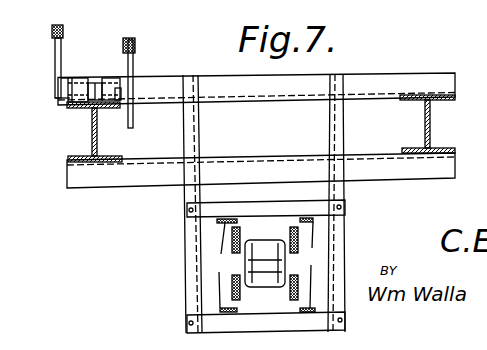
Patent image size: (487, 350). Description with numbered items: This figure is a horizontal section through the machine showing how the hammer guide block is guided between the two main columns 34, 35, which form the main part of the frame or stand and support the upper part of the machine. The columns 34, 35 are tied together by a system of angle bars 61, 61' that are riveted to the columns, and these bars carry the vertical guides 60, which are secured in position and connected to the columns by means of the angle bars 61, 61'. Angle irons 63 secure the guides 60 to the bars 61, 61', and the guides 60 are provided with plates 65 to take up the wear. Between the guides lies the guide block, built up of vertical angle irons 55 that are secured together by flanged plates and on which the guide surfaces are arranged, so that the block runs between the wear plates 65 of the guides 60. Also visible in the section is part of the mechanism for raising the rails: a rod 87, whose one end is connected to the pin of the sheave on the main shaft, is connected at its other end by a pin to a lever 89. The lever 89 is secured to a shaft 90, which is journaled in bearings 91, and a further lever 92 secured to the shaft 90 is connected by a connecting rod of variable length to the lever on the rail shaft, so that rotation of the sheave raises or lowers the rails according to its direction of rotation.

The column 34 is at (431, 123).
The column 35 is at (92, 128).
The vertical angle iron 55 is at (268, 263).
The vertical guide 60 is at (268, 265).
The angle bar 61 is at (256, 203).
The angle bar 61' is at (261, 178).
The angle iron 63 is at (267, 205).
The wear plate 65 is at (293, 225).
The rod 87 is at (134, 122).
The lever 89 is at (125, 84).
The shaft 90 is at (95, 88).
The bearing 91 is at (110, 78).
The lever 92 is at (55, 50).